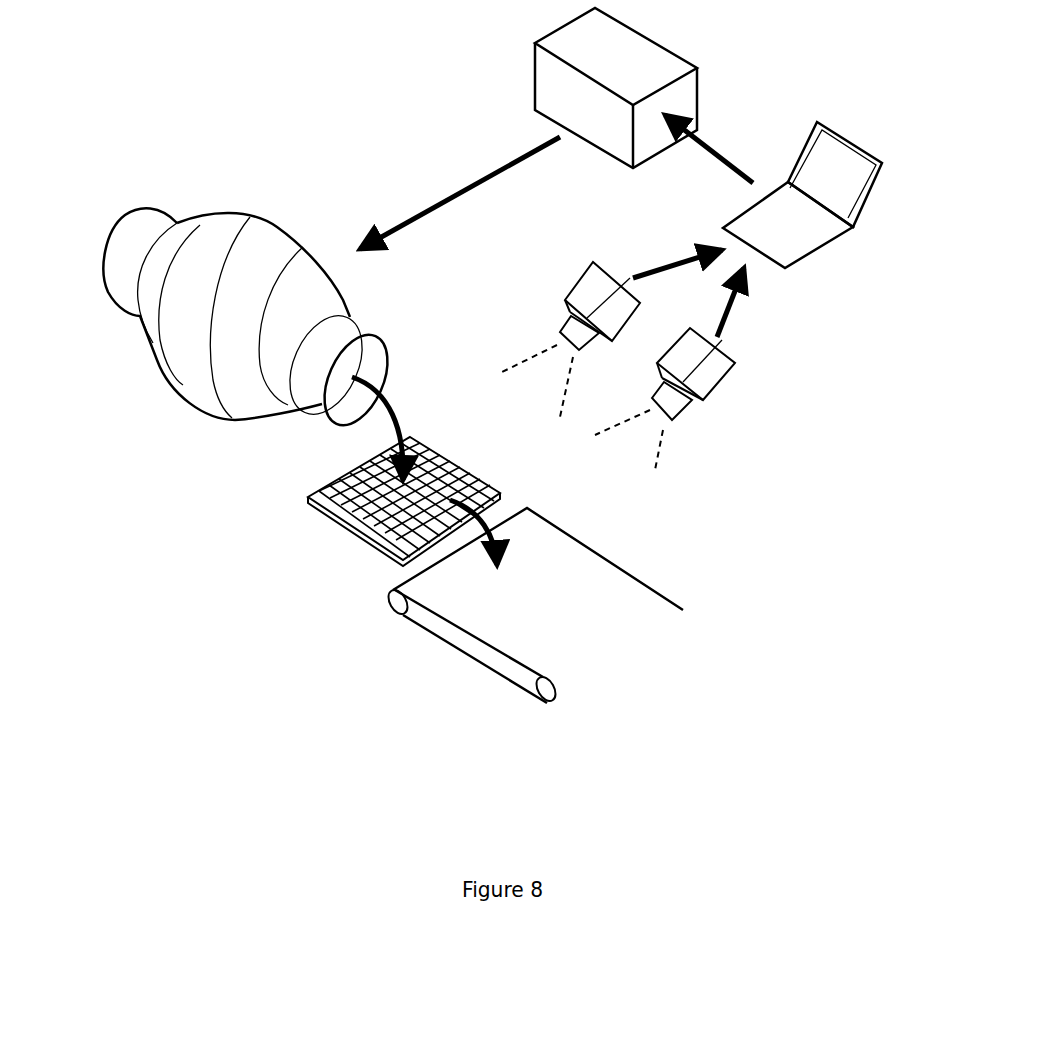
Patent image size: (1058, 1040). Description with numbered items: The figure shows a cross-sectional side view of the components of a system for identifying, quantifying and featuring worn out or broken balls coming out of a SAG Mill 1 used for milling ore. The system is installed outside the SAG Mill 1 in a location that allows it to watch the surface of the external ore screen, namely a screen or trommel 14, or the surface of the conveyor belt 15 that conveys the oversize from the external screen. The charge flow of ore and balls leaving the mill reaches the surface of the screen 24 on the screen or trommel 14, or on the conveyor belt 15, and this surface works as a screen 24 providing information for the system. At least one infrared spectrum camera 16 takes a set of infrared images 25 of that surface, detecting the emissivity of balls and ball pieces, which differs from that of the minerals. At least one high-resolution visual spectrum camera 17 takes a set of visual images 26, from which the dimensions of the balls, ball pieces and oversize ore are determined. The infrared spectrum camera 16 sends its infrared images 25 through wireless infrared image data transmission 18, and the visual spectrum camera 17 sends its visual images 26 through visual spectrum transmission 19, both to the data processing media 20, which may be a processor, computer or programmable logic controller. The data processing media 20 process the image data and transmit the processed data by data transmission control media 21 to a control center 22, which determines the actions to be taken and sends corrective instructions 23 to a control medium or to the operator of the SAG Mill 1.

The SAG Mill 1 is at (220, 321).
The screen or trommel 14 is at (347, 521).
The conveyor belt 15 is at (505, 609).
The infrared spectrum camera 16 is at (533, 296).
The visual spectrum camera 17 is at (754, 403).
The infrared image data transmission 18 is at (619, 228).
The visual spectrum image data transmission 19 is at (807, 315).
The data processing media 20 is at (841, 209).
The data transmission control media 21 is at (751, 103).
The control center 22 is at (545, 88).
The corrective instructions 23 is at (419, 193).
The screen surface 24 is at (322, 466).
The infrared images 25 is at (499, 372).
The visual images 26 is at (685, 475).